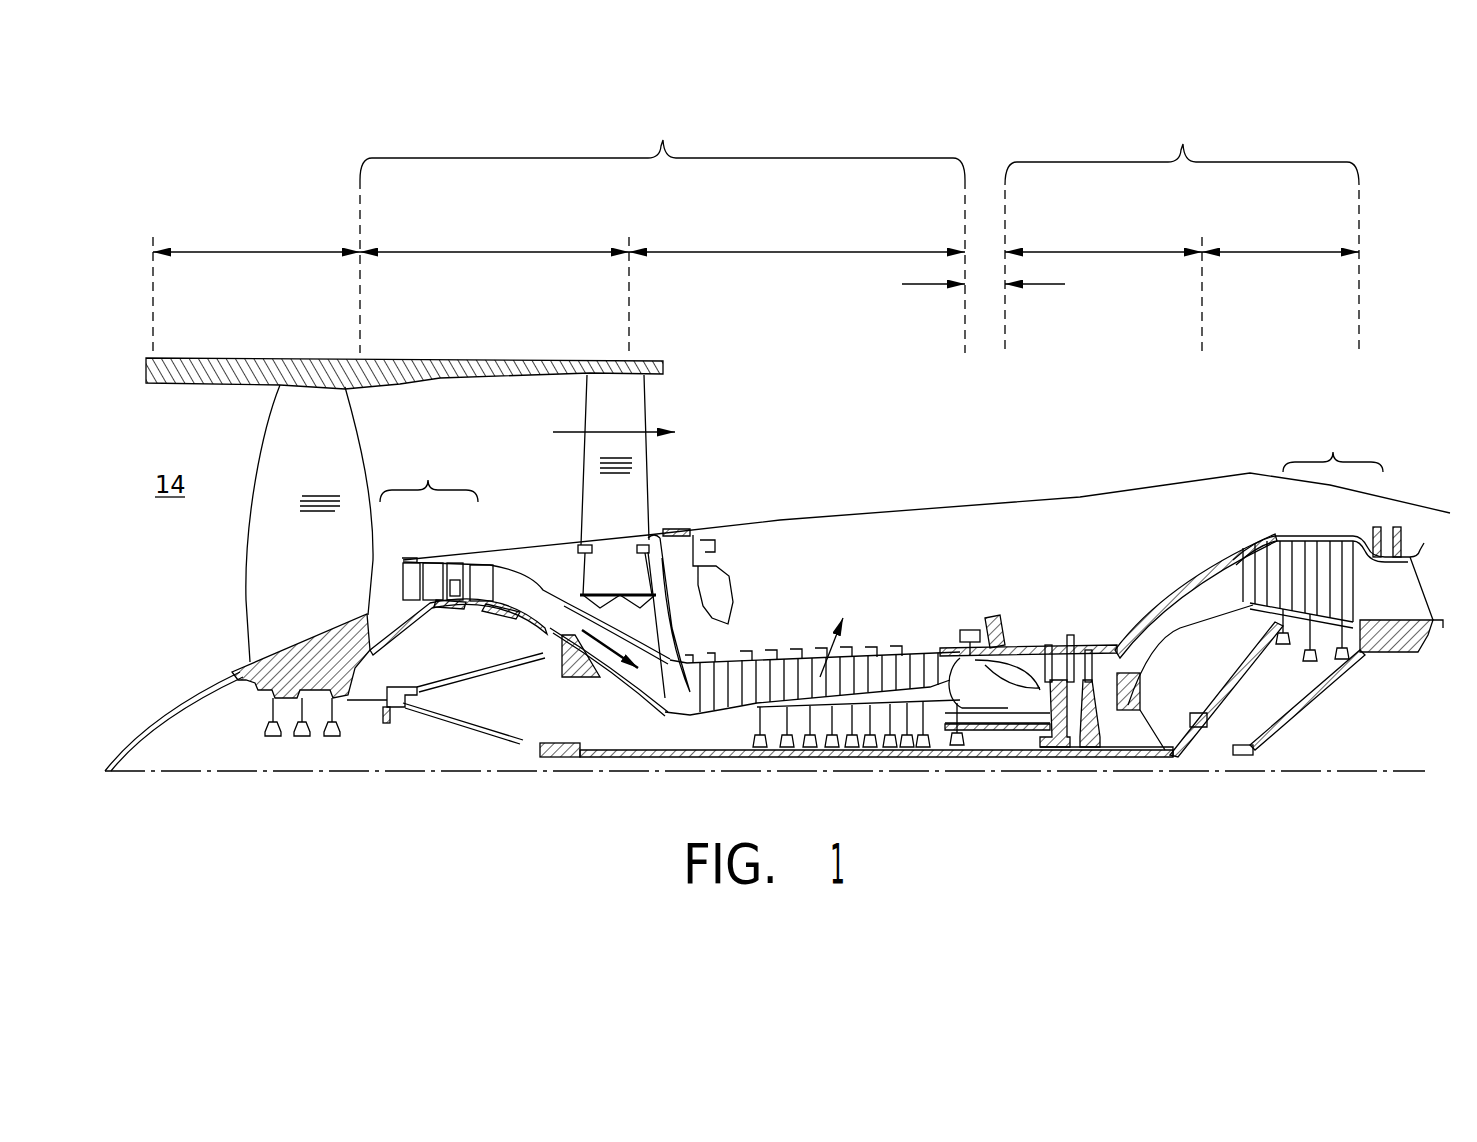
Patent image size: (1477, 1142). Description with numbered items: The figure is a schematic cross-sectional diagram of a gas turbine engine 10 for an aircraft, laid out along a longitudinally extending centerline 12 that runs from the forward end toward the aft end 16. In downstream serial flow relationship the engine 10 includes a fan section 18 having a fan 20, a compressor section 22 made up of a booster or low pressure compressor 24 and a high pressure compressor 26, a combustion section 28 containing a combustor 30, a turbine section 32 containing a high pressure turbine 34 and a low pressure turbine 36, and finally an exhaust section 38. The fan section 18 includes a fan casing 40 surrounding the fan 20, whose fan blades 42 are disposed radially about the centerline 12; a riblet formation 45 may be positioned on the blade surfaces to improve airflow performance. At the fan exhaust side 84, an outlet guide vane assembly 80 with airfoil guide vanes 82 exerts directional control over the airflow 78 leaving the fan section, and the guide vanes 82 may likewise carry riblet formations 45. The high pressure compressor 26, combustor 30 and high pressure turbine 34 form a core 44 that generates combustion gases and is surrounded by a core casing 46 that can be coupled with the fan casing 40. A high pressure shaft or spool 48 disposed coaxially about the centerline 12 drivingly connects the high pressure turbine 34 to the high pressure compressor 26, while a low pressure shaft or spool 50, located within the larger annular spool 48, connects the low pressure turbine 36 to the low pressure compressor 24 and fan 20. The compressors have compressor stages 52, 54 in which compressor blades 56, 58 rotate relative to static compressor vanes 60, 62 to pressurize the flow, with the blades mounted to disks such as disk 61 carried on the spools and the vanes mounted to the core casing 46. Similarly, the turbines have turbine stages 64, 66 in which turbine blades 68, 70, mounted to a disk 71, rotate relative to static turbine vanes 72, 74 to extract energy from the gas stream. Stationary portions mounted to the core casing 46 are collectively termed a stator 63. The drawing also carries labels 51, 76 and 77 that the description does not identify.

The gas turbine engine 10 is at (1378, 283).
The centerline 12 is at (232, 773).
The aft 16 is at (1460, 590).
The fan section 18 is at (258, 252).
The fan 20 is at (235, 618).
The compressor section 22 is at (663, 140).
The booster or low pressure compressor 24 is at (505, 252).
The high pressure compressor 26 is at (798, 252).
The combustion section 28 is at (909, 284).
The combustor 30 is at (1000, 630).
The turbine section 32 is at (1183, 144).
The high pressure turbine 34 is at (1105, 252).
The low pressure turbine 36 is at (1285, 252).
The exhaust section 38 is at (1427, 563).
The fan casing 40 is at (395, 358).
The fan blades 42 is at (328, 428).
The core 44 is at (925, 545).
The riblet formation 45 is at (305, 508).
The core casing 46 is at (1188, 590).
The HP shaft or spool 48 is at (973, 723).
The LP shaft or spool 50 is at (558, 757).
The shaft 51 is at (826, 758).
The compressor stages 52 is at (428, 480).
The compressor stages 54 is at (795, 640).
The compressor blades 56 is at (445, 565).
The compressor blades 58 is at (740, 665).
The static compressor vanes 60 is at (412, 565).
The disk 61 is at (462, 606).
The static compressor vanes 62 is at (692, 672).
The stator 63 is at (693, 712).
The turbine stages 64 is at (1050, 595).
The turbine stages 66 is at (1333, 452).
The turbine blades 68 is at (1050, 655).
The turbine blades 70 is at (1338, 540).
The disk 71 is at (1060, 760).
The static turbine vanes 72 is at (1045, 650).
The static turbine vanes 74 is at (1325, 548).
The core inlet duct 76 is at (595, 680).
The bleed air flow 77 is at (820, 677).
The airflow 78 is at (570, 432).
The outlet guide vane assembly 80 is at (658, 498).
The outlet guide vanes 82 is at (592, 470).
The fan exhaust side 84 is at (663, 406).